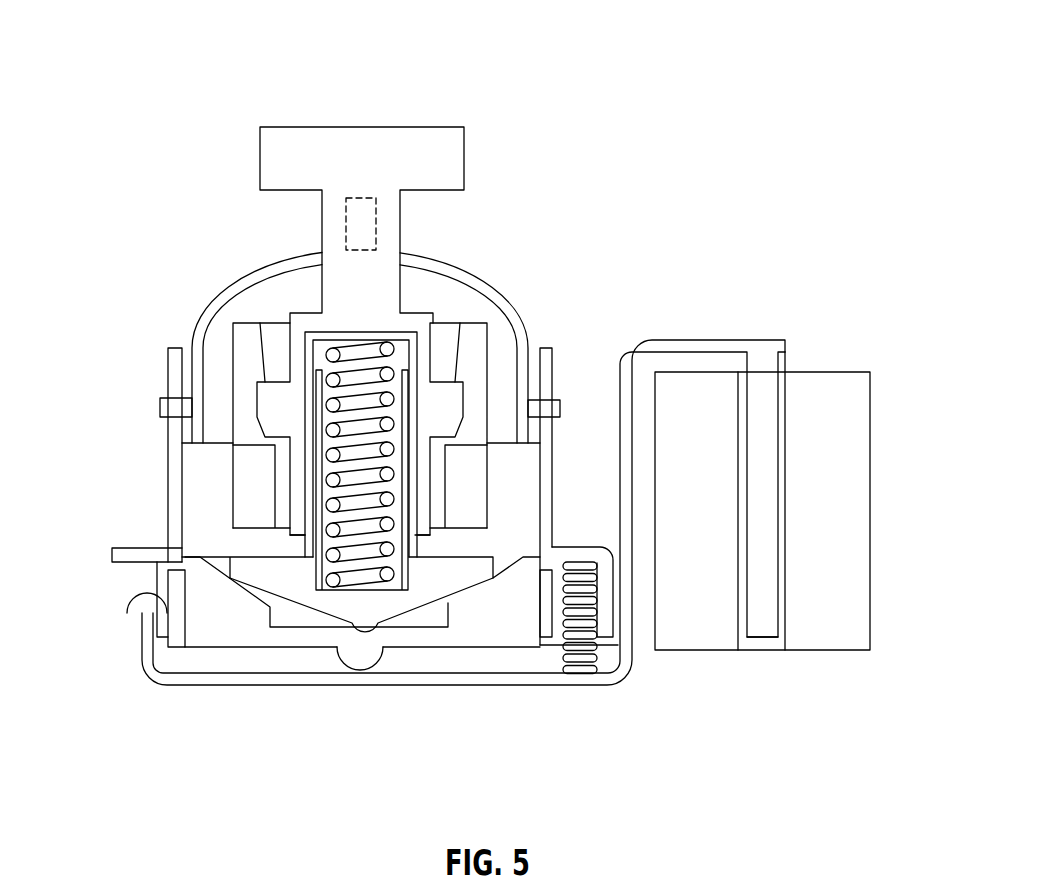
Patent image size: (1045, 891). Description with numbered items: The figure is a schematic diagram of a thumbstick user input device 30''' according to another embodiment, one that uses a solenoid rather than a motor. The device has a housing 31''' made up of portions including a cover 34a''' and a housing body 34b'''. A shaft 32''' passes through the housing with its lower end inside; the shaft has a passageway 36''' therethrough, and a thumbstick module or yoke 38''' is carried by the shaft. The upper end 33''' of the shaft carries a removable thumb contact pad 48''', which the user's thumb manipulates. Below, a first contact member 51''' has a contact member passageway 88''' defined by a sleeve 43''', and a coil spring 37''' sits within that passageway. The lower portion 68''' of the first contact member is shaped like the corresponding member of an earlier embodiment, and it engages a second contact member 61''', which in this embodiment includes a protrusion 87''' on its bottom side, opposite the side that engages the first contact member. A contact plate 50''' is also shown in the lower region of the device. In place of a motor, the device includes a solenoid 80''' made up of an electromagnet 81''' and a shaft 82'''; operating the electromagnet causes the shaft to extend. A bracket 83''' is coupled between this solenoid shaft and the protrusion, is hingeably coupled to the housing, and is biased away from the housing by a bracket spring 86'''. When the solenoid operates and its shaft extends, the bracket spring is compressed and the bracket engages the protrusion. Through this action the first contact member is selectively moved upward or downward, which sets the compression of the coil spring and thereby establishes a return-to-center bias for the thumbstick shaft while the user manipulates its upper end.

The thumbstick user input device 30''' is at (373, 411).
The removable thumb contact pad 48''' is at (412, 188).
The upper end of the shaft 33''' is at (288, 203).
The cover 34a''' is at (309, 328).
The shaft 32''' is at (337, 371).
The coil spring 37''' is at (444, 372).
The passageway 36''' is at (453, 413).
The sleeve 43''' is at (233, 427).
The housing body 34b''' is at (317, 496).
The thumbstick module or yoke 38''' is at (265, 493).
The housing 31''' is at (106, 536).
The contact plate 50''' is at (395, 532).
The first contact member 51''' is at (338, 647).
The lower portion of the first contact member 68''' is at (406, 674).
The contact member passageway 88''' is at (447, 705).
The second contact member 61''' is at (354, 646).
The protrusion 87''' is at (306, 704).
The bracket spring 86''' is at (634, 643).
The solenoid 80''' is at (537, 491).
The bracket 83''' is at (456, 468).
The electromagnet 81''' is at (801, 501).
The shaft 82''' is at (814, 684).